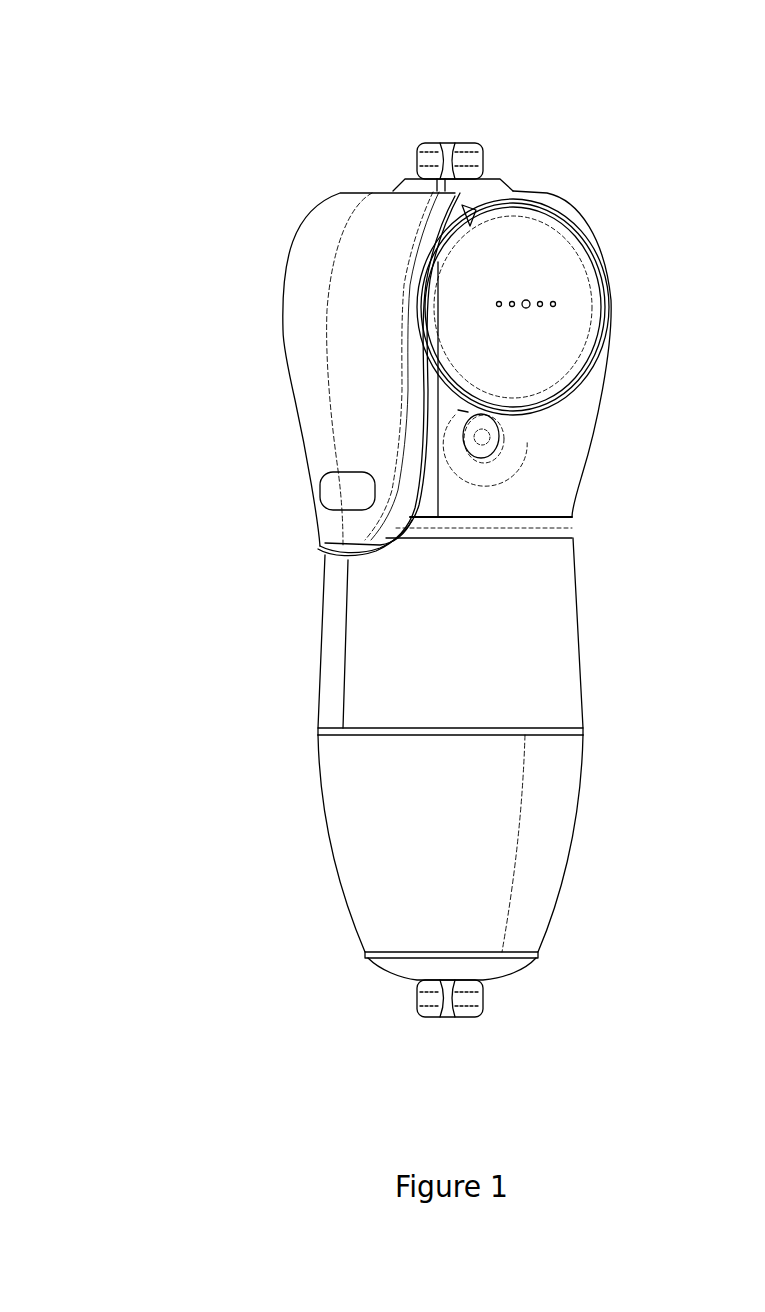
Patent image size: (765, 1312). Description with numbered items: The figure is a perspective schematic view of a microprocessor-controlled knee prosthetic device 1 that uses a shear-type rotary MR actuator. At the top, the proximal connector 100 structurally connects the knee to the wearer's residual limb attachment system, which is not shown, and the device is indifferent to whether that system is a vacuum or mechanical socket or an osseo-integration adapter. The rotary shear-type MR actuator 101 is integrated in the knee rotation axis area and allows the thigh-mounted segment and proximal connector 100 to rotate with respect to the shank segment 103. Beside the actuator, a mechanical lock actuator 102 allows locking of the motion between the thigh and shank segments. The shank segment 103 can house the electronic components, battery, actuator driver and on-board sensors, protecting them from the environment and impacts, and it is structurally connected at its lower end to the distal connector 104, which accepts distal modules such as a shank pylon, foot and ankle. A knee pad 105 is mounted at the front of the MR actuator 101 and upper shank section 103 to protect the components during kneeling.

The microprocessor-controlled knee prosthetic device 1 is at (138, 65).
The proximal connector 100 is at (470, 153).
The rotary shear-type MR actuator 101 is at (565, 265).
The mechanical lock actuator 102 is at (483, 438).
The shank segment 103 is at (560, 667).
The distal connector 104 is at (472, 1005).
The knee pad 105 is at (305, 223).